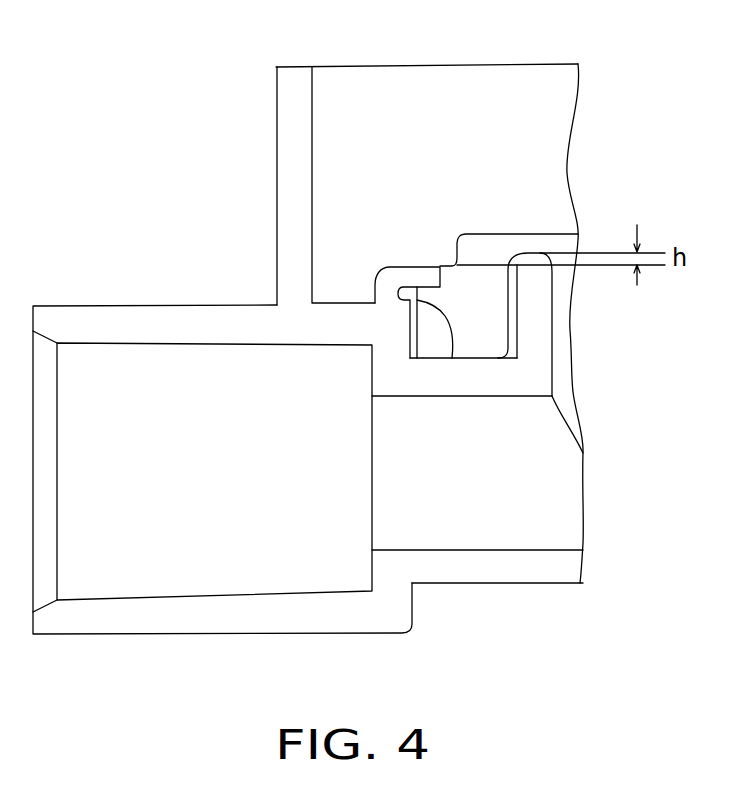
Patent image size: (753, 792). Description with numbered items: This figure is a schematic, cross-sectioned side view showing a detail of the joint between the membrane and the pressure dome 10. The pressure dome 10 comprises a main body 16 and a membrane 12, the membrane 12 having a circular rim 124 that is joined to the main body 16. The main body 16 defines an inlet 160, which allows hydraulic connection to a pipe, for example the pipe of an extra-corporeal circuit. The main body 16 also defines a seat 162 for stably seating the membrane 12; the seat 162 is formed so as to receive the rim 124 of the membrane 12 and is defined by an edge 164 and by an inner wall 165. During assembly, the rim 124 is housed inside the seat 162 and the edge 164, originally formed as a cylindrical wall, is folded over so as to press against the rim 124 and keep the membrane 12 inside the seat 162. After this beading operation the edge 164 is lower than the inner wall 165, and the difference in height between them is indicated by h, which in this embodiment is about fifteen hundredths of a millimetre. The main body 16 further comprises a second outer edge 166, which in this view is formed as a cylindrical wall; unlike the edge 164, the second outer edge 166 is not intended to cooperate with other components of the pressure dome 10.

The pressure dome 10 is at (133, 184).
The membrane 12 is at (548, 233).
The main body 16 is at (277, 182).
The circular rim 124 is at (468, 318).
The inlet 160 is at (160, 515).
The seat 162 is at (412, 309).
The edge 164 is at (413, 262).
The inner wall 165 is at (542, 276).
The second outer edge 166 is at (373, 66).